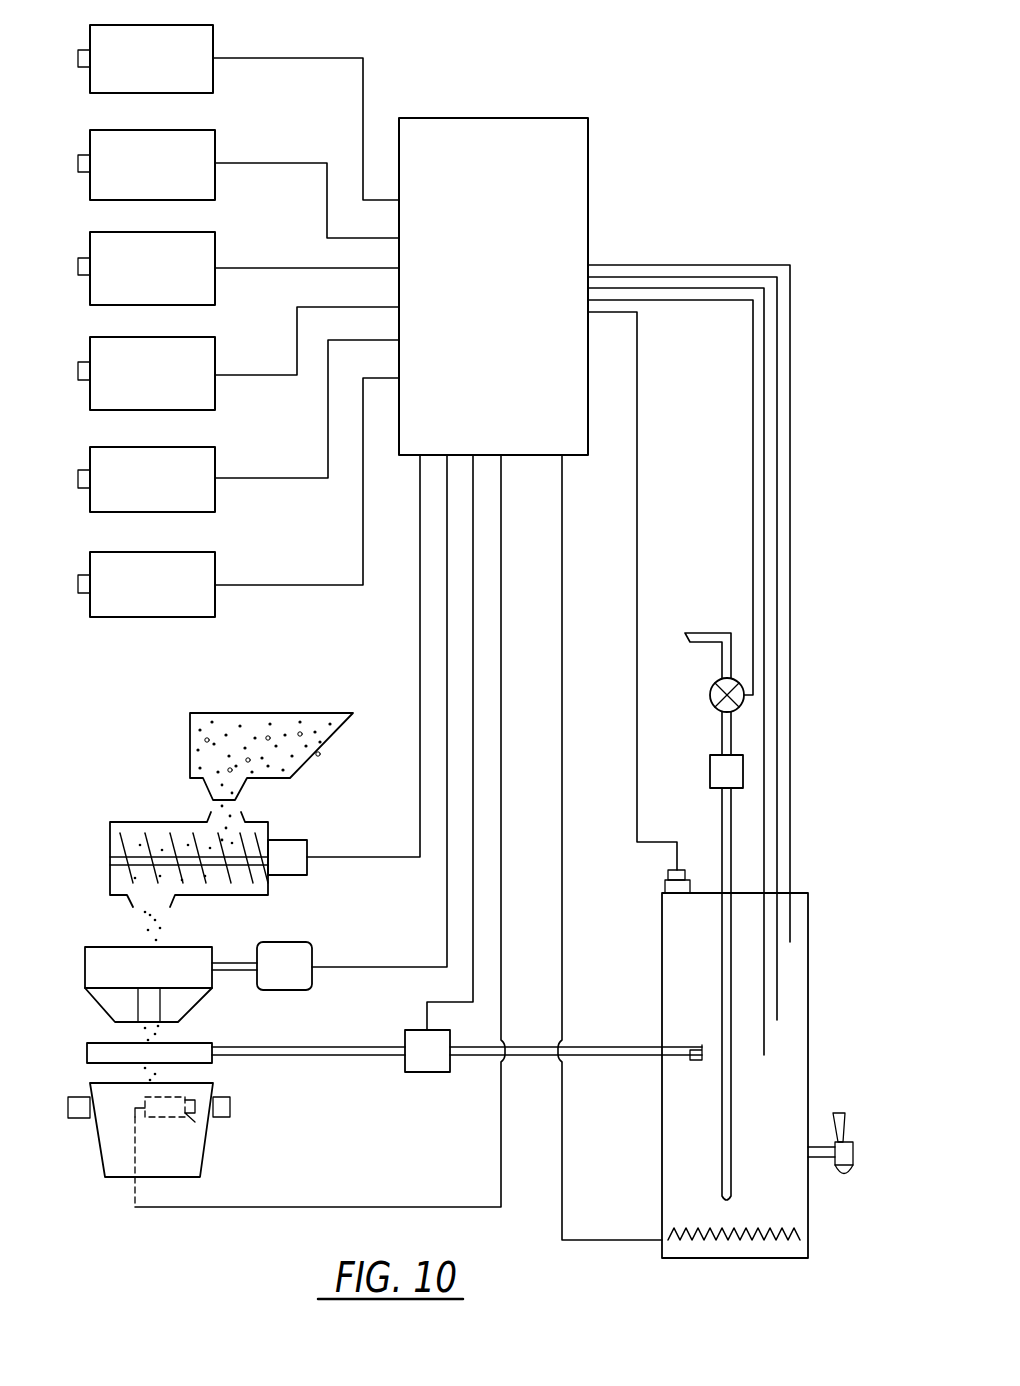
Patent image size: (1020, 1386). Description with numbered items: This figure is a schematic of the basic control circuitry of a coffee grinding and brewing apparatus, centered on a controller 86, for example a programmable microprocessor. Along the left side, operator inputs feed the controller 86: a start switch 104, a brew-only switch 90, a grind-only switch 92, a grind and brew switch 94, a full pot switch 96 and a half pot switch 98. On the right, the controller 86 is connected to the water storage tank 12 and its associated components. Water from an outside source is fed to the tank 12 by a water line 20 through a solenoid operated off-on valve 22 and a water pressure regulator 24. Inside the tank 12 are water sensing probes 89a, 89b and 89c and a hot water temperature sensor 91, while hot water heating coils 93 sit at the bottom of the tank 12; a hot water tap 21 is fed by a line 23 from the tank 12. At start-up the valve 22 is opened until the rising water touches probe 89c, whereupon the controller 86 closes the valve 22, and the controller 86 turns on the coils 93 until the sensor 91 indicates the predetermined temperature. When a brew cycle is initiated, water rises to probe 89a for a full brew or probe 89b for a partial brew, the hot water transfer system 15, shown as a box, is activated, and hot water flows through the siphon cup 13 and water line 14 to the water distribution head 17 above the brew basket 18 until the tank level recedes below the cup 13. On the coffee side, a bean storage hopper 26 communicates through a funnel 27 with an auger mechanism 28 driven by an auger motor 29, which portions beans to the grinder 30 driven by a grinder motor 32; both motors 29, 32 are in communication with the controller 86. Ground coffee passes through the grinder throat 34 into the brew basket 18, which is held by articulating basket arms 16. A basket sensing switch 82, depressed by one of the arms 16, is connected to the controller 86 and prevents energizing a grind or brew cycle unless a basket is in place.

The start switch 104 is at (213, 25).
The brew-only switch 90 is at (215, 130).
The grind-only switch 92 is at (215, 232).
The grind and brew switch 94 is at (215, 337).
The full pot switch 96 is at (215, 447).
The half pot switch 98 is at (215, 555).
The controller 86 is at (578, 115).
The water storage tank 12 is at (808, 1073).
The siphon cup 13 is at (692, 1062).
The water line 14 is at (625, 1058).
The hot water transfer system 15 is at (432, 1072).
The articulating basket arms 16 is at (68, 1100).
The water distribution head 17 is at (87, 1052).
The brew basket 18 is at (100, 1157).
The water line 20 is at (708, 603).
The hot water tap 21 is at (853, 1153).
The off-on valve 22 is at (710, 693).
The line 23 is at (822, 1157).
The water pressure regulator 24 is at (710, 762).
The coffee bean storage hopper 26 is at (190, 730).
The funnel 27 is at (207, 790).
The auger mechanism 28 is at (110, 822).
The auger motor 29 is at (307, 840).
The coffee bean grinder 30 is at (85, 960).
The grinder motor 32 is at (303, 943).
The grinder throat 34 is at (97, 1007).
The switch 82 is at (200, 1123).
The water sensing probe 89a is at (793, 927).
The water sensing probe 89b is at (778, 1002).
The water sensing probe 89c is at (763, 1043).
The hot water temperature sensor 91 is at (665, 882).
The hot water heating coils 93 is at (750, 1240).